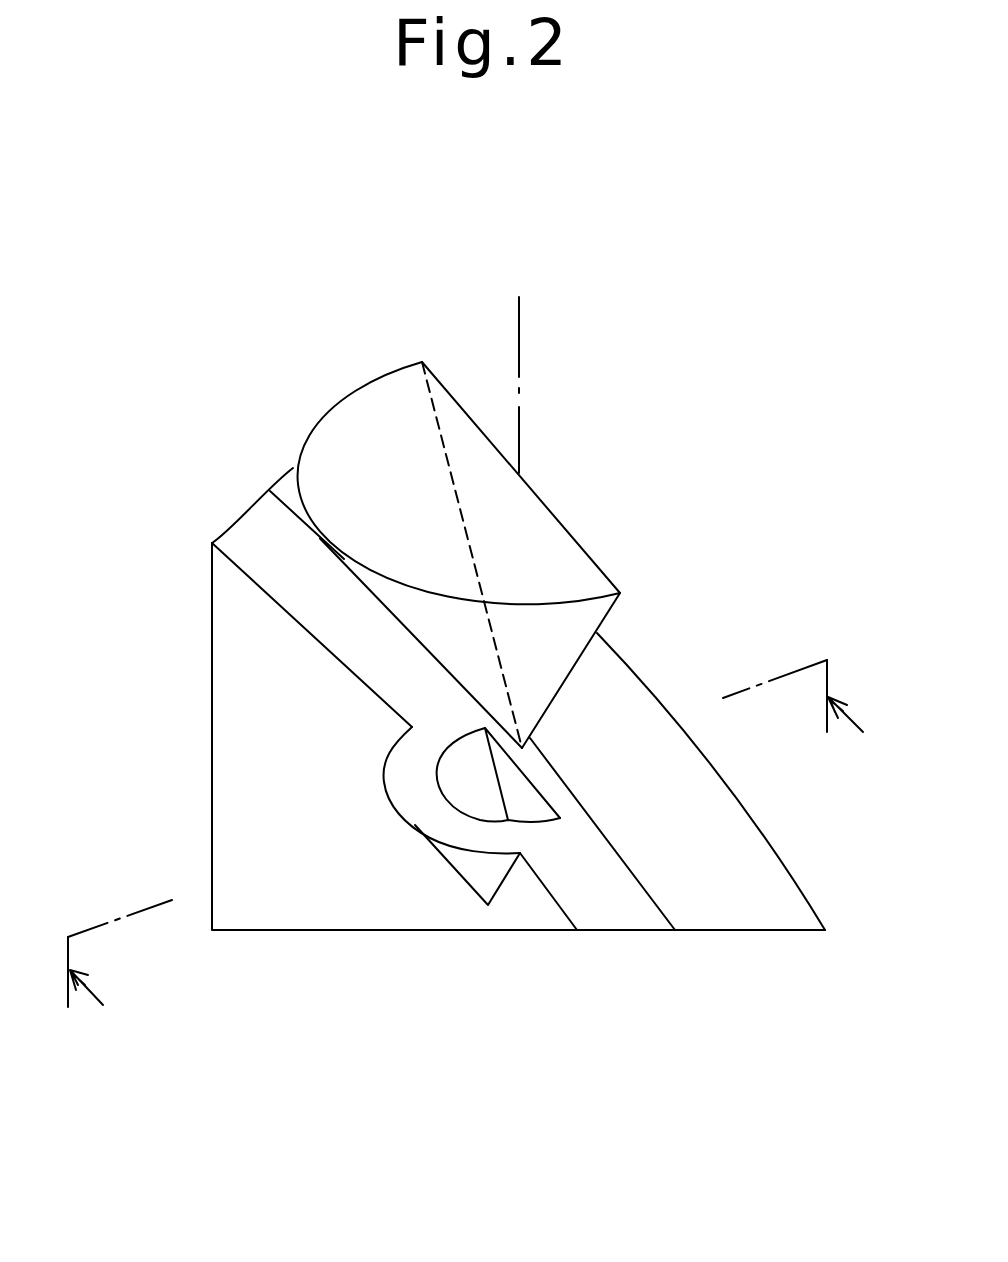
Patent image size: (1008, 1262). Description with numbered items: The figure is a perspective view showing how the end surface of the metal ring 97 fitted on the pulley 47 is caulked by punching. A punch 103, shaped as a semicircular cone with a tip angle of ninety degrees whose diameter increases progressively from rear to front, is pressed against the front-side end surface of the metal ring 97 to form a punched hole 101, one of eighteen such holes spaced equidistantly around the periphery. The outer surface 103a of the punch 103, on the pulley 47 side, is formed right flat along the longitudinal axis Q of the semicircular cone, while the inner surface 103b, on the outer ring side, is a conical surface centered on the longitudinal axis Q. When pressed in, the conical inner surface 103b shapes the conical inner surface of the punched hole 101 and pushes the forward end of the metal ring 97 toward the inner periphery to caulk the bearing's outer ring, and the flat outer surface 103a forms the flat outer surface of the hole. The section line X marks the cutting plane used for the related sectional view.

The pulley 47 is at (753, 820).
The metal ring 97 is at (330, 607).
The punched hole 101 is at (470, 814).
The punch 103 is at (387, 496).
The outer surface of punch 103a is at (523, 540).
The inner surface of punch 103b is at (448, 640).
The longitudinal axis Q is at (520, 347).
The section line X is at (482, 845).